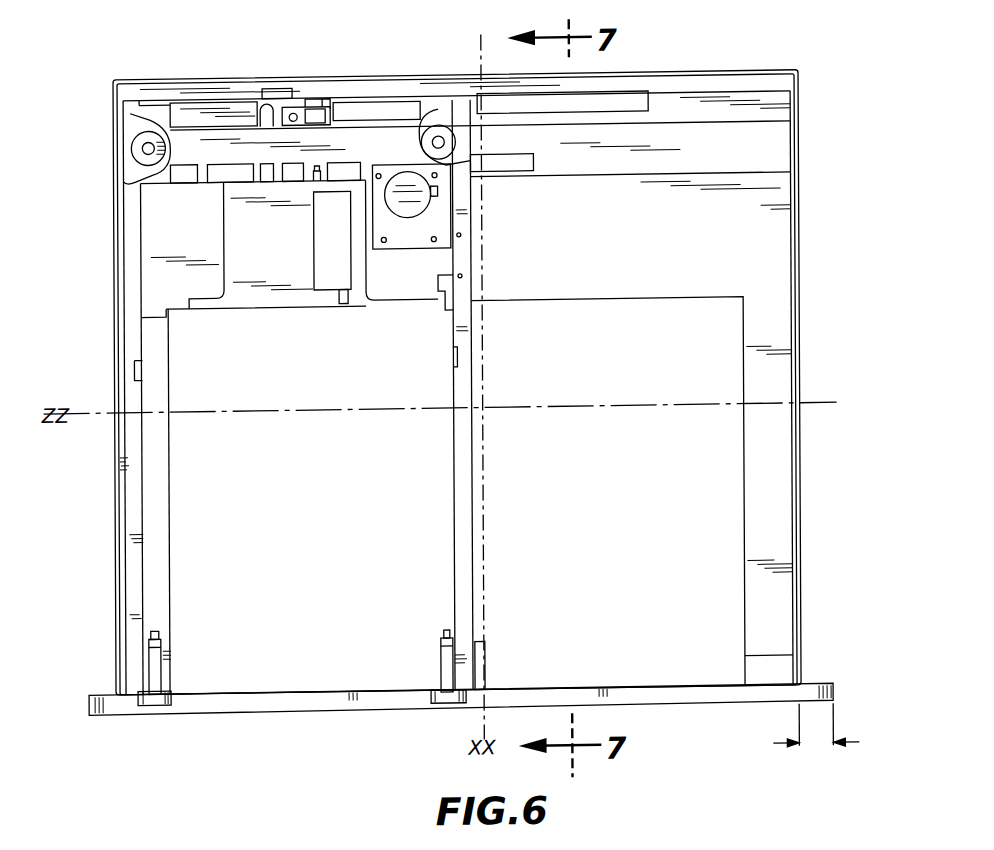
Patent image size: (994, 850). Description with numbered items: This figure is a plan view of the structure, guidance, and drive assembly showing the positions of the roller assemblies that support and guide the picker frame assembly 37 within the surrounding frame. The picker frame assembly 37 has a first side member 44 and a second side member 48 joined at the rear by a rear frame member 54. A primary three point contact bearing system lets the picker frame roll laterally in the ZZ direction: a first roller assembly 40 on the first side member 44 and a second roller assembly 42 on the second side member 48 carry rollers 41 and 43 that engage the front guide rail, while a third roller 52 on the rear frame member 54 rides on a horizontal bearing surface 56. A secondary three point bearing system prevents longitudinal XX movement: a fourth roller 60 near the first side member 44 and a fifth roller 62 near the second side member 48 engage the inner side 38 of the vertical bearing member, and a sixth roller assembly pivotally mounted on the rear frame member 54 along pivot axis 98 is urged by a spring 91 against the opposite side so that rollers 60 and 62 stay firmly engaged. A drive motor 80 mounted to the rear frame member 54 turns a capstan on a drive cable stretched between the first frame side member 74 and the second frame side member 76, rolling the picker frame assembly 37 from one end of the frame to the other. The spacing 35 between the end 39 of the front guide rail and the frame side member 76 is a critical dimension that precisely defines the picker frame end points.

The spacing 35 is at (812, 748).
The picker frame assembly 37 is at (482, 477).
The inner side of vertical bearing member 38 is at (790, 128).
The end of front guide rail 39 is at (832, 698).
The first roller assembly 40 is at (160, 664).
The roller 41 is at (160, 709).
The second roller assembly 42 is at (436, 667).
The roller 43 is at (447, 712).
The first side member 44 is at (169, 549).
The second side member 48 is at (451, 546).
The third roller 52 is at (287, 91).
The rear frame member 54 is at (176, 97).
The horizontal bearing surface 56 is at (690, 117).
The fourth roller 60 is at (148, 150).
The fifth roller 62 is at (456, 151).
The first frame side member 74 is at (116, 500).
The second frame side member 76 is at (800, 513).
The drive motor 80 is at (432, 207).
The spring 91 is at (330, 108).
The pivot axis 98 is at (294, 112).